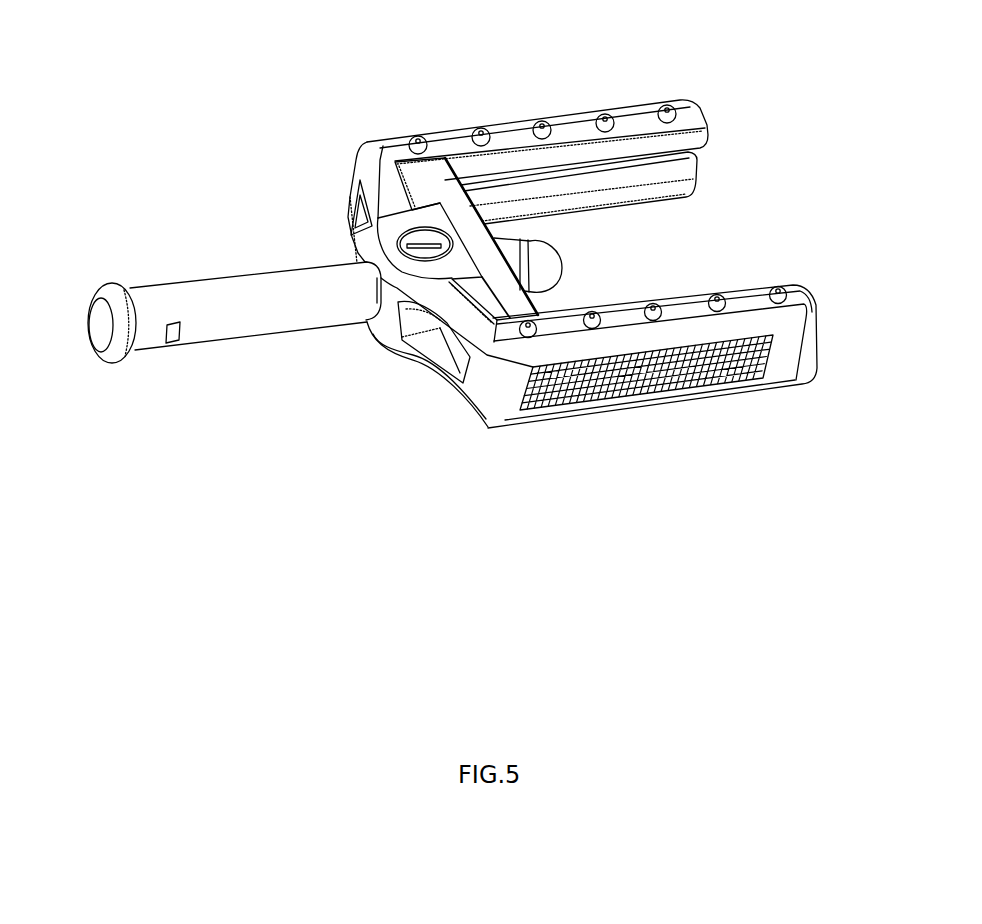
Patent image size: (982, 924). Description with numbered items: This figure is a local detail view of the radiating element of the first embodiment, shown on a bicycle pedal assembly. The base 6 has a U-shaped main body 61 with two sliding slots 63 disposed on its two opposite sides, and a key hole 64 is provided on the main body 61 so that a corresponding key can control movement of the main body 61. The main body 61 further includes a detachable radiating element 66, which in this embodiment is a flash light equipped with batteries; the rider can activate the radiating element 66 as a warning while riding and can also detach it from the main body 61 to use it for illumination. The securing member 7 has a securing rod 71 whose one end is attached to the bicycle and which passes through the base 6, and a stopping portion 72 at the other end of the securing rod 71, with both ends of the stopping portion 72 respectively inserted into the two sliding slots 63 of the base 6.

The base 6 is at (598, 442).
The main body 61 is at (498, 392).
The sliding slots 63 is at (670, 160).
The key hole 64 is at (417, 246).
The radiating element 66 is at (702, 375).
The securing member 7 is at (282, 370).
The securing rod 71 is at (243, 292).
The stopping portion 72 is at (430, 177).